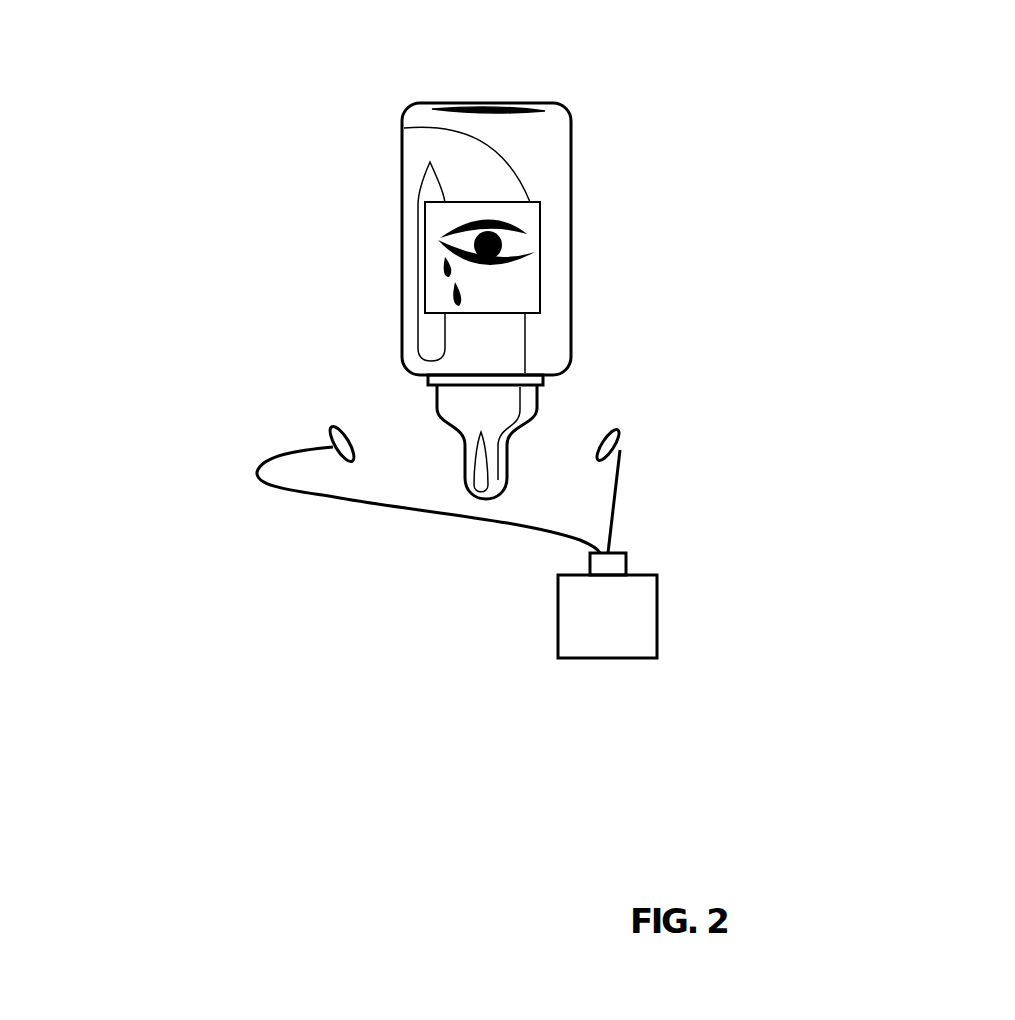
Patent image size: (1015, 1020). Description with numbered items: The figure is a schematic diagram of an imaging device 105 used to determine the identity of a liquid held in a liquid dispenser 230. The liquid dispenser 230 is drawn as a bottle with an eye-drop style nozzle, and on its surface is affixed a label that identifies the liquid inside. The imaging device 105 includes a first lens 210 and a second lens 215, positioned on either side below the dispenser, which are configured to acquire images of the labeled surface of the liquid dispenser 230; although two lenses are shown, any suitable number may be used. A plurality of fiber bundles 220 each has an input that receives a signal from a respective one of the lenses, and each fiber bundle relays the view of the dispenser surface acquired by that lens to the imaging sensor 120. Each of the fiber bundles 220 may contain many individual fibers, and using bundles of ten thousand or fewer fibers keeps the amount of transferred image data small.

The imaging device 105 is at (262, 57).
The liquid dispenser 230 is at (598, 176).
The first lens 210 is at (308, 402).
The second lens 215 is at (628, 401).
The fiber bundles 220 is at (501, 504).
The imaging sensor 120 is at (673, 614).